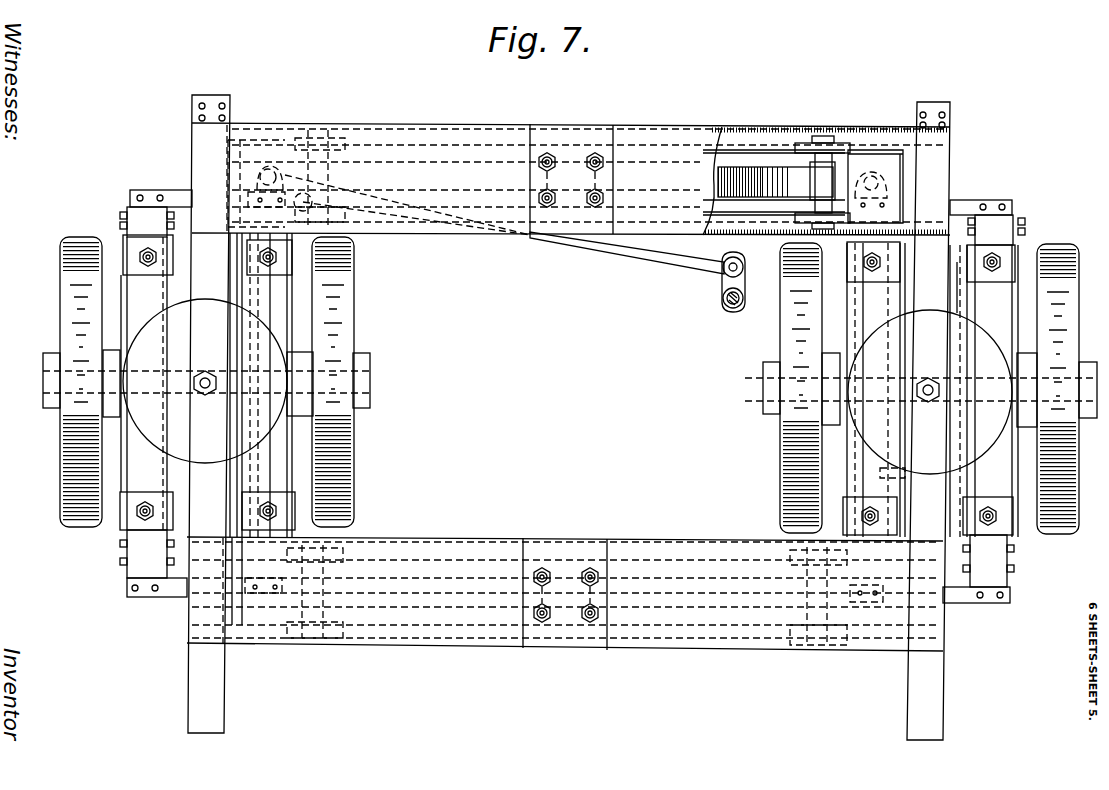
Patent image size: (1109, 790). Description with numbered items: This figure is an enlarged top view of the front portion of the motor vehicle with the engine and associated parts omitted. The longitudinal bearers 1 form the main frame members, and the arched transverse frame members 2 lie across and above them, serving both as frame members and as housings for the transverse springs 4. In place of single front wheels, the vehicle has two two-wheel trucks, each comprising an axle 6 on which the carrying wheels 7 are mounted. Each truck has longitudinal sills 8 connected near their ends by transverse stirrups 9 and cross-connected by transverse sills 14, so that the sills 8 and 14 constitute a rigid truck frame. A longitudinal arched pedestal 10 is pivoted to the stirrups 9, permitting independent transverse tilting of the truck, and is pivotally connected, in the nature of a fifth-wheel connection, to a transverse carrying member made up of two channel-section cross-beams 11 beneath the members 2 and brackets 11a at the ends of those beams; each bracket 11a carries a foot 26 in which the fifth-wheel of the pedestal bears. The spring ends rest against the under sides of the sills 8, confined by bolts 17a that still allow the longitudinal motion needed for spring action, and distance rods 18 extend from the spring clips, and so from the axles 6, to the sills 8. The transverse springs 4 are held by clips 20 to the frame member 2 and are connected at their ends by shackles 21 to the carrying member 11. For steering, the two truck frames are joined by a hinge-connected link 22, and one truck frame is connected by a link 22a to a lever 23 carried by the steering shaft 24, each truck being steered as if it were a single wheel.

The longitudinal bearers 1 is at (210, 700).
The transverse frame members 2 is at (724, 132).
The transverse springs 4 is at (760, 165).
The axle 6 is at (375, 384).
The carrying wheels 7 is at (62, 490).
The longitudinal sills 8 is at (140, 222).
The transverse stirrups 9 is at (128, 240).
The longitudinal arched pedestal 10 is at (185, 292).
The cross-beams 11 is at (868, 160).
The brackets 11a is at (905, 470).
The transverse sills 14 is at (175, 191).
The bolts 17a is at (1032, 198).
The distance rods 18 is at (120, 300).
The clips 20 is at (540, 180).
The shackles 21 is at (333, 615).
The link 22 is at (818, 150).
The link 22a is at (650, 254).
The lever 23 is at (720, 277).
The steering shaft 24 is at (728, 310).
The foot 26 is at (170, 335).